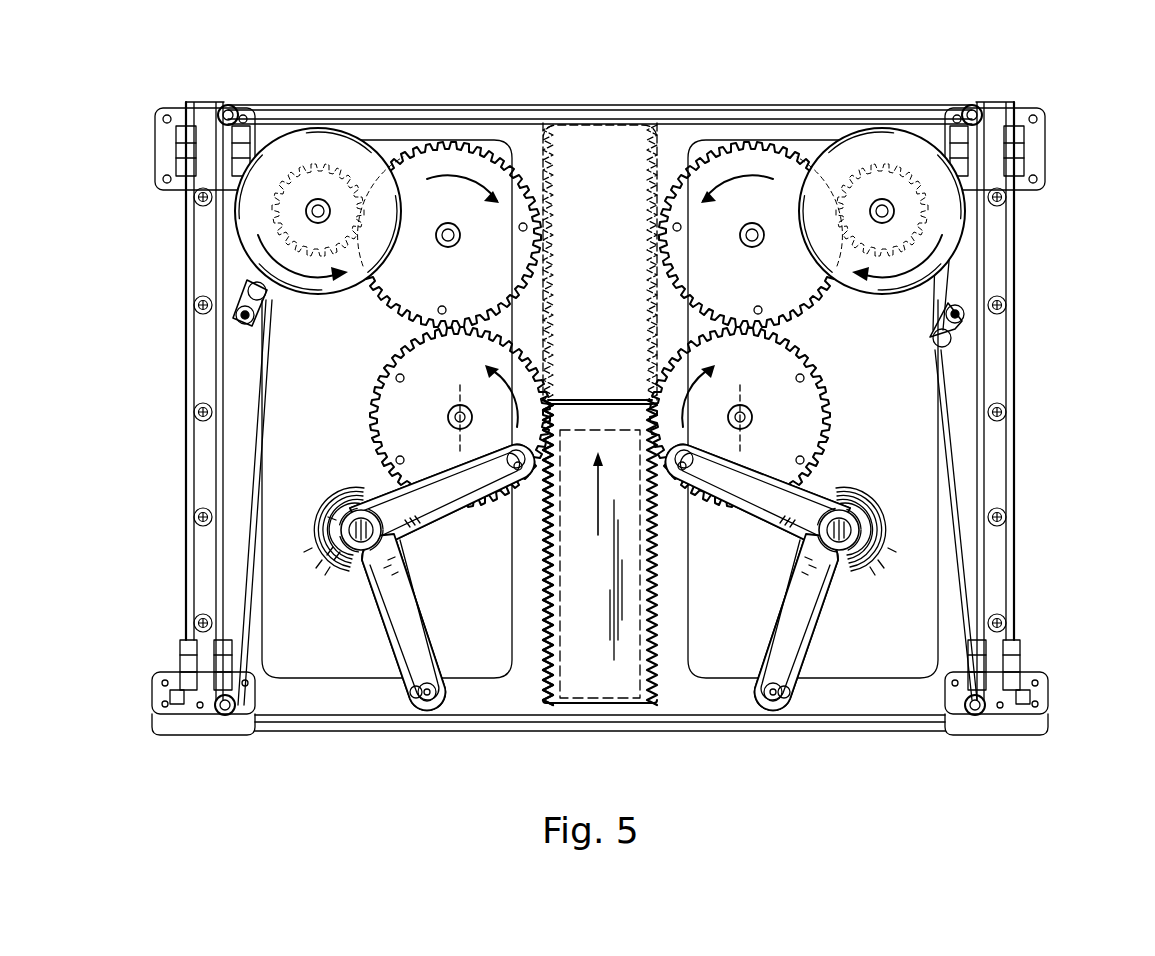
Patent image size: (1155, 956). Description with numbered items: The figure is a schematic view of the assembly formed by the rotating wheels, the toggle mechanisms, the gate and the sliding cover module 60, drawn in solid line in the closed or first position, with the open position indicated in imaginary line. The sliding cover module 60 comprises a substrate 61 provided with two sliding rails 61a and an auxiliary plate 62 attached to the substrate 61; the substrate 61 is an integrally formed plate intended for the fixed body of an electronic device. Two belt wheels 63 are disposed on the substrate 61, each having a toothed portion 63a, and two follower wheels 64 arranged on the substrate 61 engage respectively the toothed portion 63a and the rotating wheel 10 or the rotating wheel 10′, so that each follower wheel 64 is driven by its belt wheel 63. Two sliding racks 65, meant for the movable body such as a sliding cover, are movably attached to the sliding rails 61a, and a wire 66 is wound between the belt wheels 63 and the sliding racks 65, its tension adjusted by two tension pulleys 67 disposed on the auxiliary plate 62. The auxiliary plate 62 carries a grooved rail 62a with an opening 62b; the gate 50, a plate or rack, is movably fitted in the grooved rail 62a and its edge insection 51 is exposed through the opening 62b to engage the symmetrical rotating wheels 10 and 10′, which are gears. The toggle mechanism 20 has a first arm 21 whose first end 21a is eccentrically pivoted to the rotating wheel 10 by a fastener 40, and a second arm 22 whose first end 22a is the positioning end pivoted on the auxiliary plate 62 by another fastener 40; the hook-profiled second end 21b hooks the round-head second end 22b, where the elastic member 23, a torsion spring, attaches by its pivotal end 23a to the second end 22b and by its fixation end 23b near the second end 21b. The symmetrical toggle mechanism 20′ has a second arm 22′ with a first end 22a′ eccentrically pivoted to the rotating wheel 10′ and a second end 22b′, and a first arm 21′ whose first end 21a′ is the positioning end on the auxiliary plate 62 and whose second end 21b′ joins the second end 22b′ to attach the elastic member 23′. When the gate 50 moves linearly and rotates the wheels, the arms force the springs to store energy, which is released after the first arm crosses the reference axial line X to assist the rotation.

The rotating wheel 10 is at (430, 345).
The rotating wheel 10′ is at (790, 345).
The toggle mechanism 20 is at (282, 507).
The toggle mechanism 20′ is at (918, 507).
The first arm 21 is at (500, 480).
The first arm 21′ is at (815, 622).
The first end 21a is at (538, 480).
The first end 21a′ is at (790, 690).
The second end 21b is at (350, 490).
The second end 21b′ is at (858, 560).
The second arm 22 is at (390, 628).
The second arm 22′ is at (745, 545).
The first end 22a is at (412, 703).
The first end 22a′ is at (705, 462).
The second end 22b is at (368, 568).
The second end 22b′ is at (846, 492).
The elastic member 23 is at (340, 515).
The elastic member 23′ is at (868, 515).
The pivotal end 23a is at (330, 548).
The fixation end 23b is at (440, 558).
The fastener 40 is at (440, 700).
The gate 50 is at (600, 690).
The insection 51 is at (545, 703).
The sliding cover module 60 is at (945, 762).
The substrate 61 is at (1014, 300).
The sliding rail 61a is at (1003, 250).
The auxiliary plate 62 is at (300, 705).
The grooved rail 62a is at (680, 140).
The opening 62b is at (593, 398).
The belt wheel 63 is at (362, 152).
The toothed portion 63a is at (308, 152).
The follower wheel 64 is at (460, 175).
The sliding rack 65 is at (150, 688).
The wire 66 is at (500, 104).
The tension pulley 67 is at (250, 292).